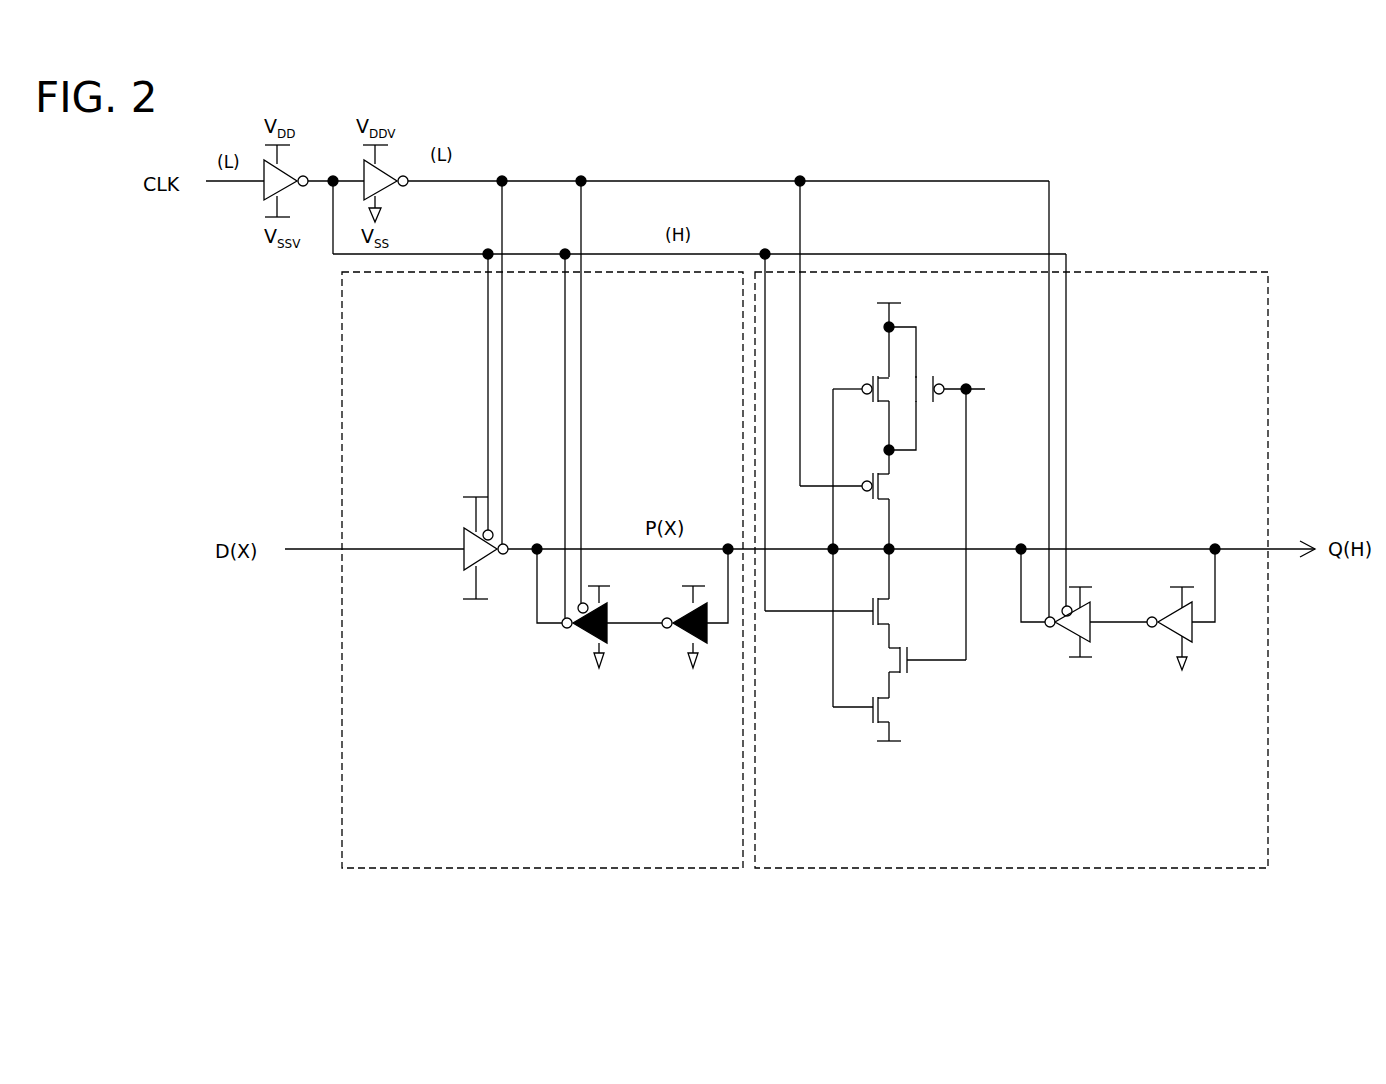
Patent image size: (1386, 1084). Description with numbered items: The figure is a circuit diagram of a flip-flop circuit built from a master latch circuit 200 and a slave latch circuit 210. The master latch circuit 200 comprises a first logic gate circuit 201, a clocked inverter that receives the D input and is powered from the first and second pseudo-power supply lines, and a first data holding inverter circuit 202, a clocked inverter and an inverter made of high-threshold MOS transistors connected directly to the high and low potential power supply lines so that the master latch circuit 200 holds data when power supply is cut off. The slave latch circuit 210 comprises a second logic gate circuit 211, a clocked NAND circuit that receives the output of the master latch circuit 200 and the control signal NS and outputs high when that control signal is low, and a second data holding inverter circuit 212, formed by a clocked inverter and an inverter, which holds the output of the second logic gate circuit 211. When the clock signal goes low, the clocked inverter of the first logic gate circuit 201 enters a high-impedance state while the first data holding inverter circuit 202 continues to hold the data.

The master latch circuit 200 is at (542, 609).
The first logic gate circuit 201 is at (436, 494).
The first data holding inverter circuit 202 is at (638, 692).
The slave latch circuit 210 is at (1011, 610).
The second logic gate circuit 211 is at (841, 724).
The second data holding inverter circuit 212 is at (1136, 690).